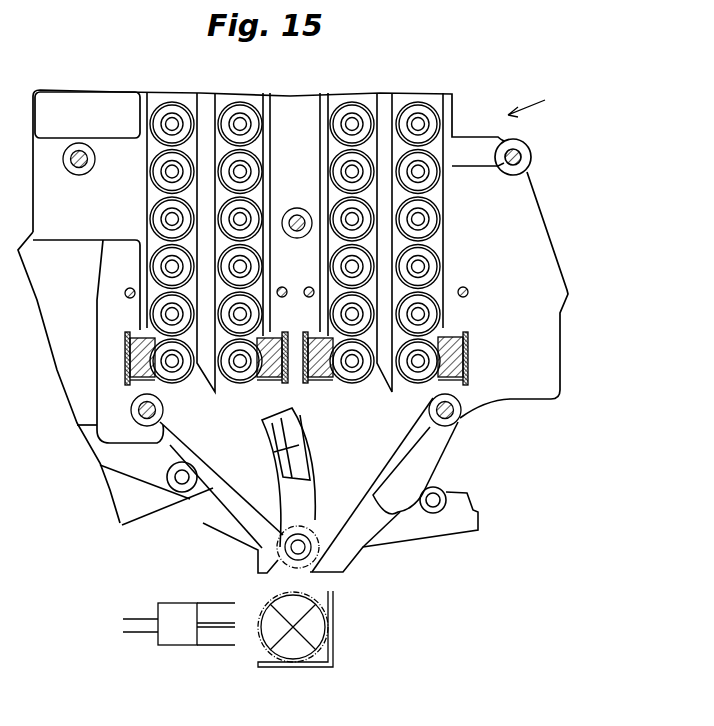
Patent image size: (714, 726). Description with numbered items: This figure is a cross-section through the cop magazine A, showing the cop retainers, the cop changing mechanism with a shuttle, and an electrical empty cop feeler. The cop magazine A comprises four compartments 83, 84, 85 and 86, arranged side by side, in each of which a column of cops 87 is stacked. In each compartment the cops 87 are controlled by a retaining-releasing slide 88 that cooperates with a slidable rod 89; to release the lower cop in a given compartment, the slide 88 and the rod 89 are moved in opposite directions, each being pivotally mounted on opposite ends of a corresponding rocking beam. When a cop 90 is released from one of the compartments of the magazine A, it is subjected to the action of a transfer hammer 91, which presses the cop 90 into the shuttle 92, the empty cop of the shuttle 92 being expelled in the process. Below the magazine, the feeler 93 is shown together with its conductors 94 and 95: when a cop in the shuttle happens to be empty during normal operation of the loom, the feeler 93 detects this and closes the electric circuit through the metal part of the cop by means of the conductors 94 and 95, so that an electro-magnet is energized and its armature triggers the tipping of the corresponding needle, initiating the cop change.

The compartment 83 is at (175, 96).
The compartment 84 is at (243, 98).
The compartment 85 is at (362, 98).
The compartment 86 is at (407, 99).
The cops 87 is at (165, 124).
The retaining-releasing slide 88 is at (128, 372).
The slidable rod 89 is at (127, 297).
The cop 90 is at (286, 566).
The transfer hammer 91 is at (305, 458).
The shuttle 92 is at (290, 660).
The feeler 93 is at (178, 645).
The conductor 94 is at (142, 619).
The conductor 95 is at (133, 632).
The cop magazine A is at (534, 101).